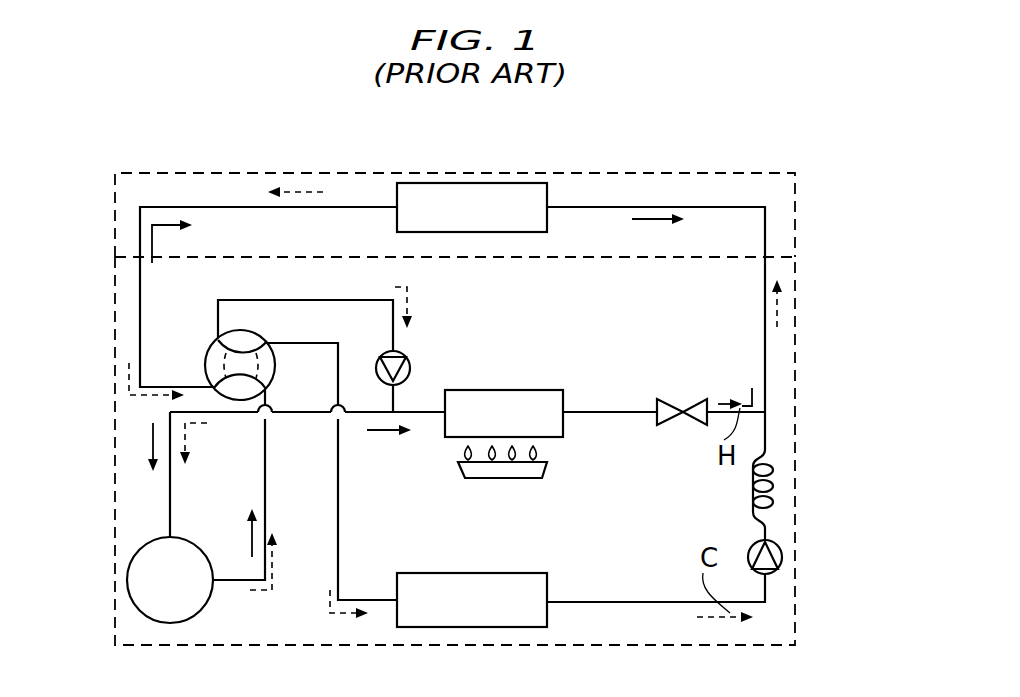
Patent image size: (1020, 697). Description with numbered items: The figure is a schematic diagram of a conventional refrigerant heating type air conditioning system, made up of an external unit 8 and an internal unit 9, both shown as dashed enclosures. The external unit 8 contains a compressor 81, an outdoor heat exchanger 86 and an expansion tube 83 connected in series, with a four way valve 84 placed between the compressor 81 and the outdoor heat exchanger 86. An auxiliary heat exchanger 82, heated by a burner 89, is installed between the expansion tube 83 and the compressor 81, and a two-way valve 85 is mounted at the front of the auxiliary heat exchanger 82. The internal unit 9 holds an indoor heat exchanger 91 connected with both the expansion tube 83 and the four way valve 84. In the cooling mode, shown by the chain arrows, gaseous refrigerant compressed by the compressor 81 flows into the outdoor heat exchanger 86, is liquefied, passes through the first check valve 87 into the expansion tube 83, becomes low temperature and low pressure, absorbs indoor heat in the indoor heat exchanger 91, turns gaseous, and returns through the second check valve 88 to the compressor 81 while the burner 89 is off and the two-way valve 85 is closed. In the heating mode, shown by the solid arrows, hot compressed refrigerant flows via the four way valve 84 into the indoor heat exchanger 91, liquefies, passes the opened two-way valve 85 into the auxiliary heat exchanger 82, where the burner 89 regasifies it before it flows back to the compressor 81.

The internal unit 9 is at (804, 186).
The external unit 8 is at (806, 322).
The indoor heat exchanger 91 is at (466, 197).
The four way valve 84 is at (208, 355).
The second check valve 88 is at (405, 356).
The auxiliary heat exchanger 82 is at (468, 403).
The burner 89 is at (525, 473).
The two-way valve 85 is at (710, 402).
The expansion tube 83 is at (772, 467).
The first check valve 87 is at (781, 543).
The compressor 81 is at (143, 602).
The outdoor heat exchanger 86 is at (397, 615).